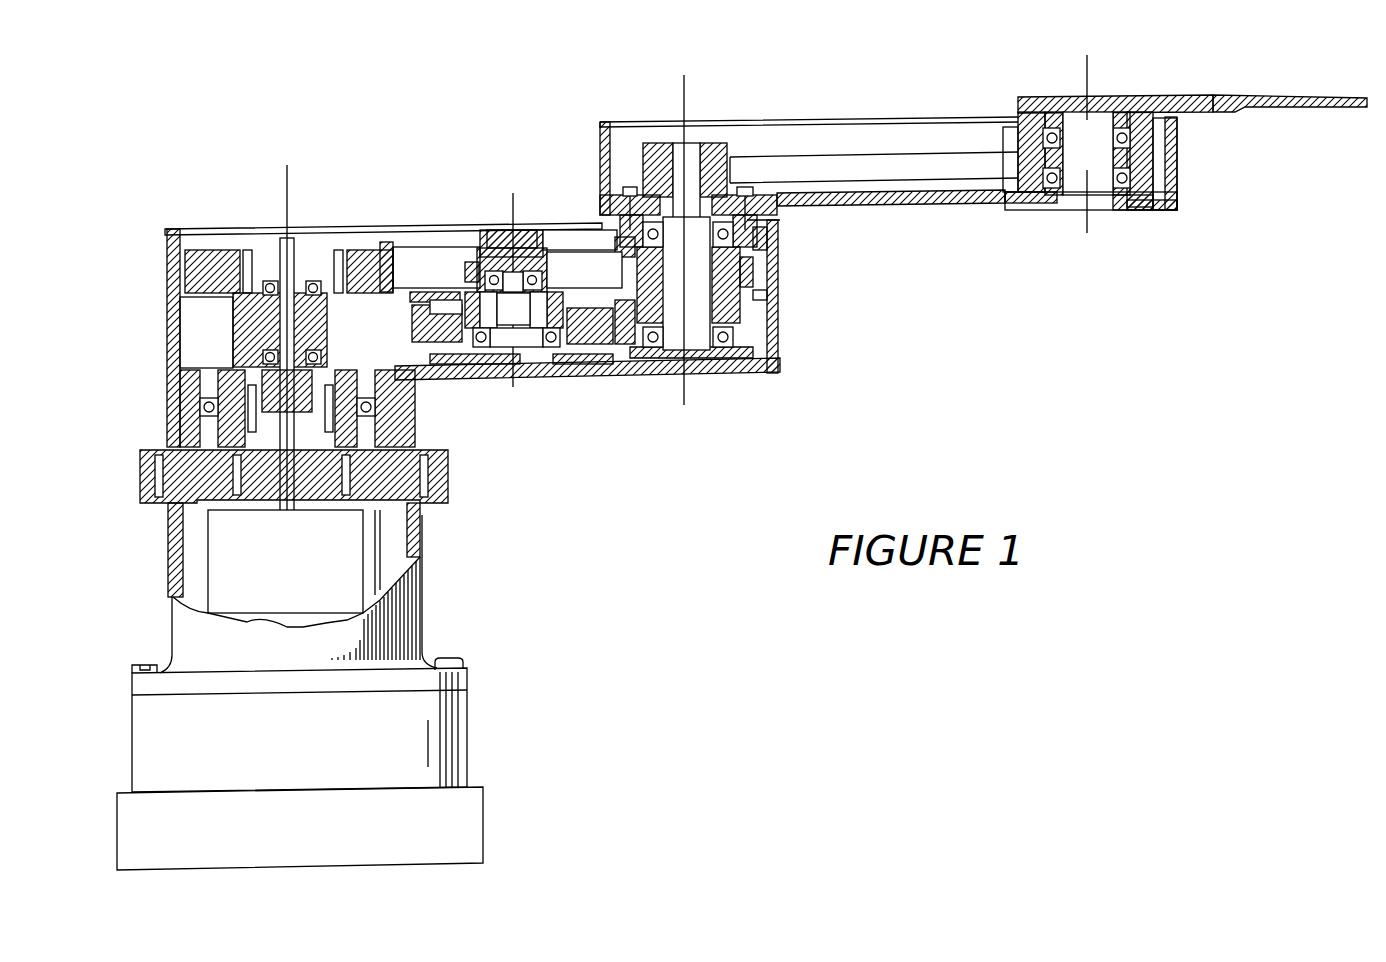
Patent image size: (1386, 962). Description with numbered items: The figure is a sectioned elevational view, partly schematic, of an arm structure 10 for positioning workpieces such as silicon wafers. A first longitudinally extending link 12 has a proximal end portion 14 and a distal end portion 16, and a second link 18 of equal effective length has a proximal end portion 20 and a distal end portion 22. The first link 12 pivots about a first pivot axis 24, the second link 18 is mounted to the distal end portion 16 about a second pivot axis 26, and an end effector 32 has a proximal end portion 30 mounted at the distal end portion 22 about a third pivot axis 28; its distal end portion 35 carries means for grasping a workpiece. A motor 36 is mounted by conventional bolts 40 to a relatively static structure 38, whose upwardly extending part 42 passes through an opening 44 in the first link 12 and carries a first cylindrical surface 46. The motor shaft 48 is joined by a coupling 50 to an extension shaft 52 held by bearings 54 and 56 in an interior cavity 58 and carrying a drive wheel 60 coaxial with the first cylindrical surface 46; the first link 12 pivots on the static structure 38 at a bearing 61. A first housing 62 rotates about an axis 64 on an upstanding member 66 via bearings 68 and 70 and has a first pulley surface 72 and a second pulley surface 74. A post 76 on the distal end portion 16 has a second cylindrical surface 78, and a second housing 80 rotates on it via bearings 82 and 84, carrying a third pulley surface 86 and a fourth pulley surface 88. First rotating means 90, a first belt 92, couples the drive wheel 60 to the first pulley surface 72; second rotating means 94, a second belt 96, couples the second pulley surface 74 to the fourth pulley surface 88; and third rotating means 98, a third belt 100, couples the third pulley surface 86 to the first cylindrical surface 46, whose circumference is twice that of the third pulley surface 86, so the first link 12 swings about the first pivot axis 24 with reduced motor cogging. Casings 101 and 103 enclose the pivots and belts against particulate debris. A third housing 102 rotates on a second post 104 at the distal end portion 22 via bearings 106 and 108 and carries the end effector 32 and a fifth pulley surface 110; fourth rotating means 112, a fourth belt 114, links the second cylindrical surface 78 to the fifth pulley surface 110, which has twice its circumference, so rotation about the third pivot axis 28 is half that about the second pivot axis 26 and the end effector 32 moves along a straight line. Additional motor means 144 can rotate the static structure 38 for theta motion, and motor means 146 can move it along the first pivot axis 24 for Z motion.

The arm structure 10 is at (270, 105).
The first longitudinally extending link 12 is at (428, 221).
The proximal end portion 14 is at (207, 226).
The distal end portion 16 is at (682, 380).
The second longitudinally extending link 18 is at (880, 108).
The proximal end portion 20 is at (598, 140).
The distal end portion 22 is at (1042, 214).
The first pivot axis 24 is at (286, 182).
The second pivot axis 26 is at (683, 93).
The third pivot axis 28 is at (1085, 78).
The proximal end portion 30 is at (1114, 94).
The end effector 32 is at (1229, 89).
The distal end portion 35 is at (1354, 113).
The motor 36 is at (307, 577).
The relatively static structure 38 is at (430, 610).
The bolts 40 is at (397, 352).
The upwardly extending part 42 is at (226, 333).
The opening 44 is at (170, 480).
The first cylindrical surface 46 is at (170, 252).
The shaft 48 is at (325, 440).
The coupling 50 is at (277, 440).
The extension shaft 52 is at (310, 278).
The bearing 54 is at (278, 278).
The bearing 56 is at (308, 355).
The interior cavity 58 is at (233, 307).
The drive wheel 60 is at (240, 355).
The bearing 61 is at (187, 397).
The first housing 62 is at (605, 347).
The axis 64 is at (518, 188).
The upstanding member 66 is at (527, 322).
The bearing 68 is at (548, 270).
The bearing 70 is at (547, 349).
The first pulley surface 72 is at (636, 343).
The second pulley surface 74 is at (471, 231).
The post 76 is at (700, 301).
The second cylindrical surface 78 is at (641, 167).
The second housing 80 is at (763, 310).
The bearing 82 is at (749, 278).
The bearing 84 is at (700, 349).
The third pulley surface 86 is at (762, 296).
The fourth pulley surface 88 is at (778, 233).
The first rotating means 90 is at (400, 352).
The first belt 92 is at (420, 372).
The second rotating means 94 is at (562, 226).
The second belt 96 is at (585, 240).
The third rotating means 98 is at (402, 235).
The third belt 100 is at (430, 280).
The casing 101 is at (338, 222).
The third housing 102 is at (1005, 130).
The casing 103 is at (767, 120).
The second post 104 is at (1105, 163).
The bearing 106 is at (1047, 108).
The bearing 108 is at (1117, 182).
The fifth pulley surface 110 is at (1181, 168).
The fourth rotating means 112 is at (789, 155).
The fourth belt 114 is at (797, 170).
The additional motor means 144 is at (320, 752).
The motor means 146 is at (320, 831).